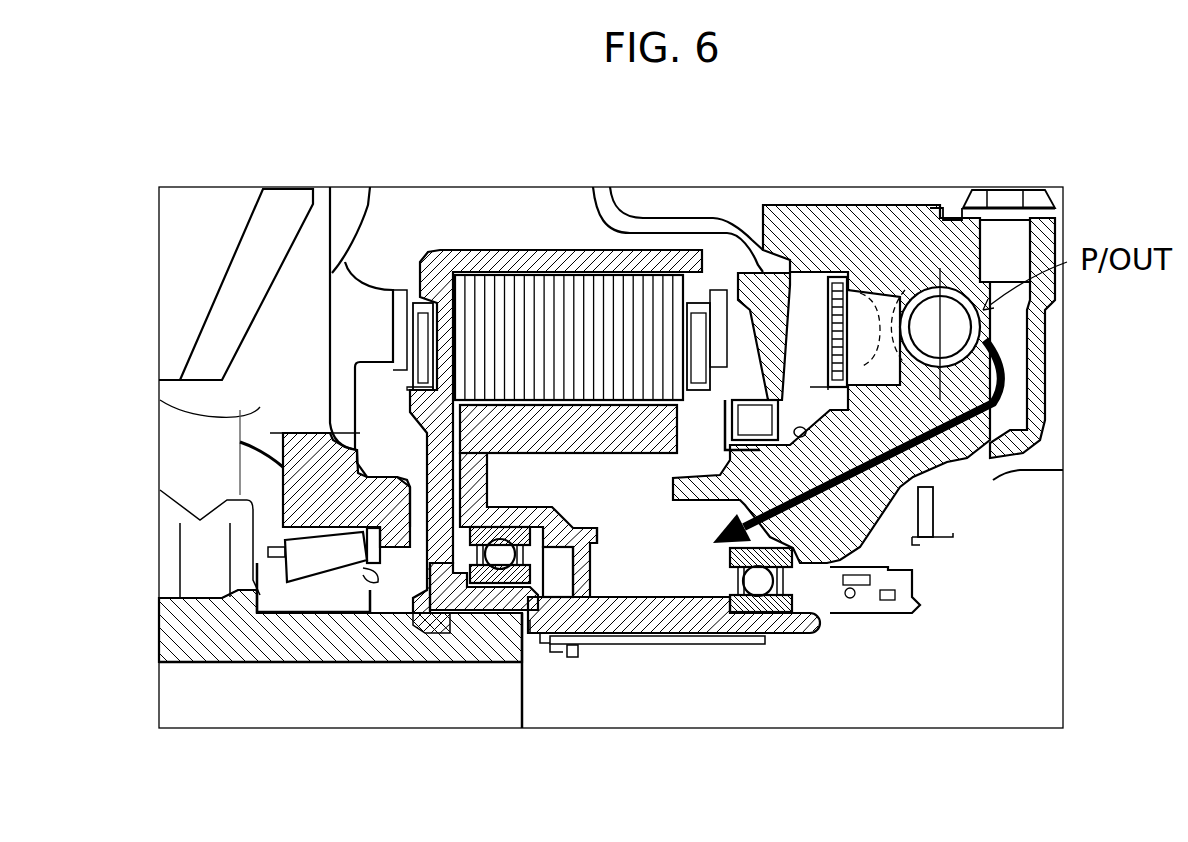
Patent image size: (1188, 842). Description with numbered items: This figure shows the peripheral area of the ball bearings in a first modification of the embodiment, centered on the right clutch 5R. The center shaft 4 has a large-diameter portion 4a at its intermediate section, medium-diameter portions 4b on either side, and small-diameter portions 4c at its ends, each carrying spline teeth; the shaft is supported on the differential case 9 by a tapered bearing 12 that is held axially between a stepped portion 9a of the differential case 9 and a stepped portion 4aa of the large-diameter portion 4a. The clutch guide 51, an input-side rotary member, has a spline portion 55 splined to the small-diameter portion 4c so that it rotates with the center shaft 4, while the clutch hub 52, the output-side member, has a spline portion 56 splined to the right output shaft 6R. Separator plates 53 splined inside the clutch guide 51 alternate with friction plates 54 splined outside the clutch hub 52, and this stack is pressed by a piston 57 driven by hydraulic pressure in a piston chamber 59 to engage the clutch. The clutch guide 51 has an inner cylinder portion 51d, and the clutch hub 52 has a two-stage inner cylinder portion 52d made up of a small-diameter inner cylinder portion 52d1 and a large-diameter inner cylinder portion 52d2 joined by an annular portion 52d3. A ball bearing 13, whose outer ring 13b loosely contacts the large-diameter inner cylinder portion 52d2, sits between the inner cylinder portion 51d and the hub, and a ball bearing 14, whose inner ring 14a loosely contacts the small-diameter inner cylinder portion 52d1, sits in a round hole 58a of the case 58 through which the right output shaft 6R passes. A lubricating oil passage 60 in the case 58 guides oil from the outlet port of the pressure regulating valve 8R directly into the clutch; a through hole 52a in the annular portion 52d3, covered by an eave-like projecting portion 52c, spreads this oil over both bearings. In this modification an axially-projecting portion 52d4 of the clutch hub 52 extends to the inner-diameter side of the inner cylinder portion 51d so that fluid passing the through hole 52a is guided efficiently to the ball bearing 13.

The center shaft 4 is at (340, 659).
The large-diameter portion 4a is at (225, 657).
The medium-diameter portion 4b is at (352, 655).
The small-diameter portion 4c is at (450, 653).
The stepped portion 4aa is at (243, 600).
The right clutch 5R is at (443, 219).
The right output shaft 6R is at (841, 697).
The pressure regulating valve 8R is at (953, 273).
The differential case 9 is at (330, 448).
The stepped portion 9a is at (283, 478).
The tapered bearing 12 is at (283, 527).
The ball bearing 13 is at (457, 527).
The outer ring 13b is at (413, 600).
The ball bearing 14 is at (789, 602).
The inner ring 14a is at (737, 597).
The clutch guide 51 is at (569, 294).
The inner cylinder portion 51d is at (490, 670).
The clutch hub 52 is at (644, 579).
The through hole 52a is at (583, 570).
The projecting portion 52c is at (606, 539).
The inner cylinder portion 52d is at (678, 690).
The small-diameter inner cylinder portion 52d1 is at (737, 637).
The large-diameter inner cylinder portion 52d2 is at (593, 635).
The annular portion 52d3 is at (647, 613).
The axially-projecting portion 52d4 is at (568, 646).
The separator plates 53 is at (460, 297).
The friction plates 54 is at (487, 375).
The spline portion 55 is at (460, 620).
The spline portion 56 is at (630, 644).
The piston 57 is at (777, 293).
The case 58 is at (897, 237).
The round hole 58a is at (810, 560).
The piston chamber 59 is at (815, 283).
The lubricating oil passage 60 is at (945, 472).